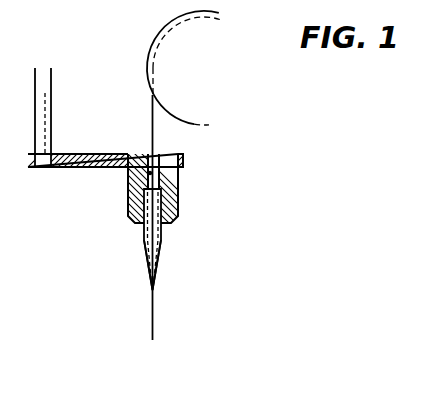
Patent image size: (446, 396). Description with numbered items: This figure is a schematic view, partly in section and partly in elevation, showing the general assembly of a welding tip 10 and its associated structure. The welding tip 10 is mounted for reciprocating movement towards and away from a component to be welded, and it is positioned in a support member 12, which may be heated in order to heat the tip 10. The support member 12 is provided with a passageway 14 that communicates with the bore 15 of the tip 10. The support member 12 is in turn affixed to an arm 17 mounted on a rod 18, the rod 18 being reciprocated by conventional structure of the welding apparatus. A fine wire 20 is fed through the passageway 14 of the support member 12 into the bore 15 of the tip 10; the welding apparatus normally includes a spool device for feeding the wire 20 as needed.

The welding tip 10 is at (162, 236).
The support member 12 is at (178, 192).
The passageway 14 is at (150, 173).
The bore 15 is at (136, 227).
The arm 17 is at (106, 137).
The rod 18 is at (53, 110).
The fine wire 20 is at (153, 128).